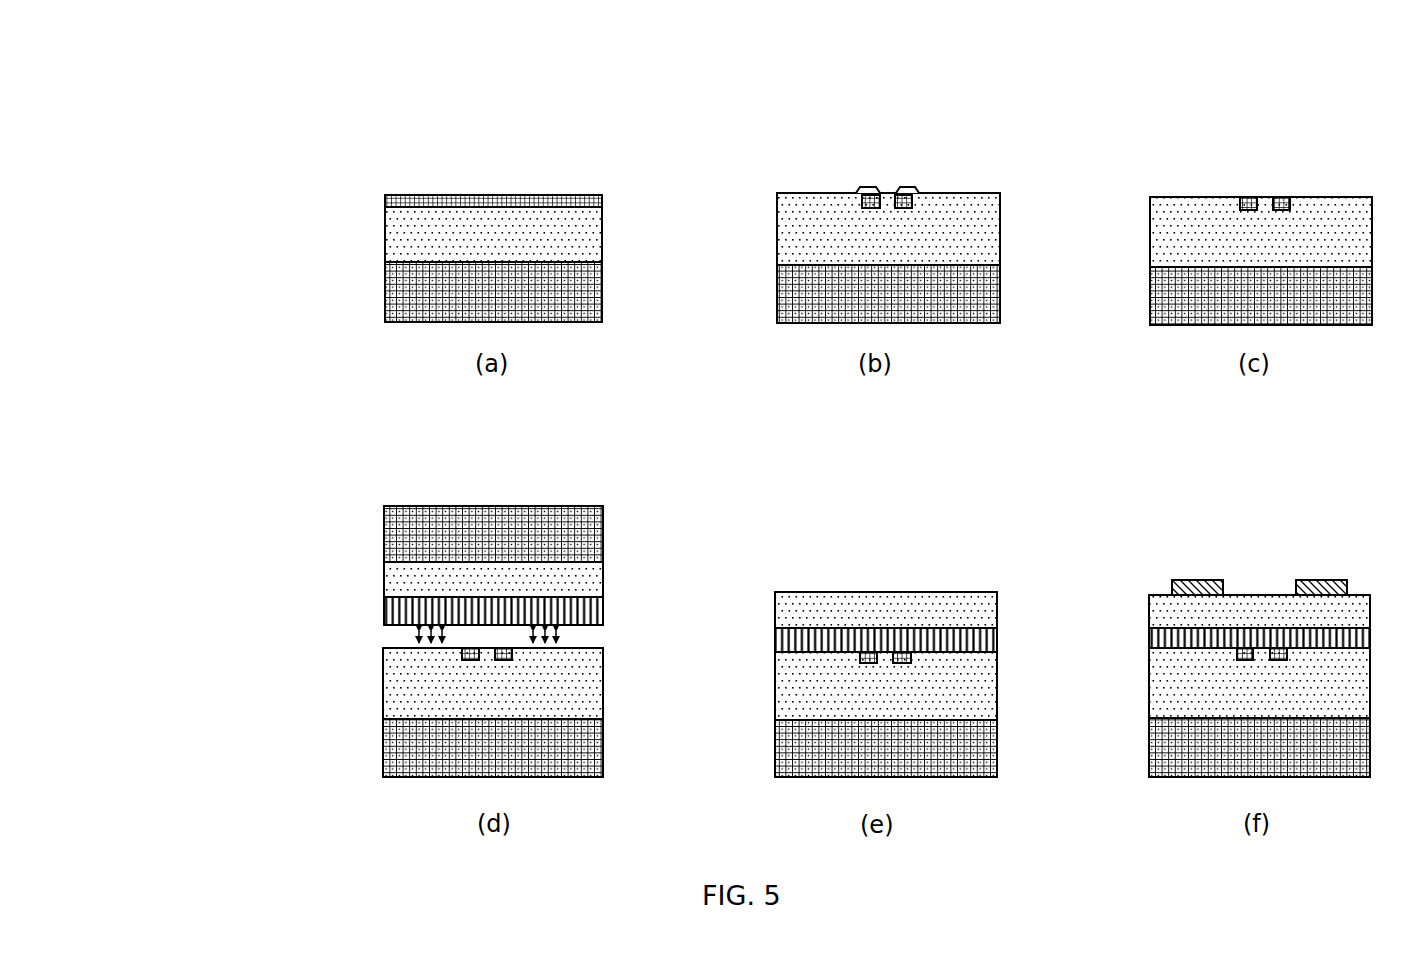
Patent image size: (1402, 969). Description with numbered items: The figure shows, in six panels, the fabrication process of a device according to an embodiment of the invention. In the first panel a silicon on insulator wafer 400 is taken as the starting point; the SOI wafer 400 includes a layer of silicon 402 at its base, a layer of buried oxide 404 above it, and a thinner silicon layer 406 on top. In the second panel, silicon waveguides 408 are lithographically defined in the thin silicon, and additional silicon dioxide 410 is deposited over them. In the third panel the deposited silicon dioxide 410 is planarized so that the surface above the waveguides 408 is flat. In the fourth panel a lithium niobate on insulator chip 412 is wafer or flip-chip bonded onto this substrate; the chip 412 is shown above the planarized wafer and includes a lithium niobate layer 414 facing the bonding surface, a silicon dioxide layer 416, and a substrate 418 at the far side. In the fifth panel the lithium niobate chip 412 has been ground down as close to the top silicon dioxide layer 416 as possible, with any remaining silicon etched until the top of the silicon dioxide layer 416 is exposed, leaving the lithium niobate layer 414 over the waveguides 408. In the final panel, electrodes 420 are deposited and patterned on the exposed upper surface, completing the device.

The SOI wafer 400 is at (349, 221).
The layer of silicon 402 is at (385, 290).
The layer of buried oxide 404 is at (385, 235).
The thinner silicon layer 406 is at (494, 195).
The silicon waveguides 408 is at (903, 195).
The additional silicon dioxide 410 is at (908, 175).
The lithium niobate on insulator chip 412 is at (358, 559).
The lithium niobate layer 414 is at (384, 612).
The silicon dioxide layer 416 is at (405, 578).
The substrate 418 is at (497, 506).
The electrodes 420 is at (1320, 587).